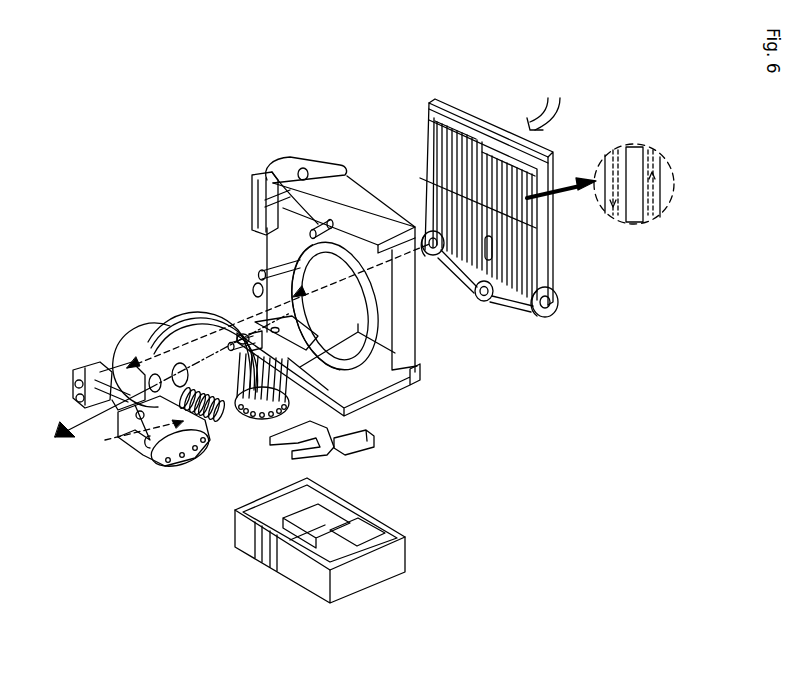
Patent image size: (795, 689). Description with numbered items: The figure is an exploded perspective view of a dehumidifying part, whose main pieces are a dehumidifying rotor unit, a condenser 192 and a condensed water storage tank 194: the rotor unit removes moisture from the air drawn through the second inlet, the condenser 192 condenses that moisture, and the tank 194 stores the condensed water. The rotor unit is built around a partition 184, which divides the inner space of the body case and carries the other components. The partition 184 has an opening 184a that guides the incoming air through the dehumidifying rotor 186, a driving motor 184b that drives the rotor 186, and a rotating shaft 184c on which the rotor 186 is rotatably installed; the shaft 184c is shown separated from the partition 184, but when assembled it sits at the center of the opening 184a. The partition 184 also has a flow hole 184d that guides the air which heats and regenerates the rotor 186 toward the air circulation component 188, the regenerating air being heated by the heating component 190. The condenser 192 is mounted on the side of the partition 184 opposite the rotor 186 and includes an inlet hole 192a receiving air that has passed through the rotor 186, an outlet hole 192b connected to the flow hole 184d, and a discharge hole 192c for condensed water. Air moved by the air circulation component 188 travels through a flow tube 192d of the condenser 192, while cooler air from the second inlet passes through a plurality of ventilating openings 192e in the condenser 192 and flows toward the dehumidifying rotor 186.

The partition 184 is at (300, 206).
The opening 184a is at (372, 300).
The driving motor 184b is at (333, 164).
The rotating shaft 184c is at (217, 318).
The flow hole 184d is at (258, 287).
The dehumidifying rotor 186 is at (150, 338).
The air circulation component 188 is at (85, 365).
The heating component 190 is at (138, 420).
The condenser 192 is at (470, 103).
The inlet hole 192a is at (545, 318).
The outlet hole 192b is at (432, 231).
The discharge hole 192c is at (535, 312).
The flow tube 192d is at (428, 132).
The ventilating openings 192e is at (445, 143).
The condensed water storage tank 194 is at (393, 561).